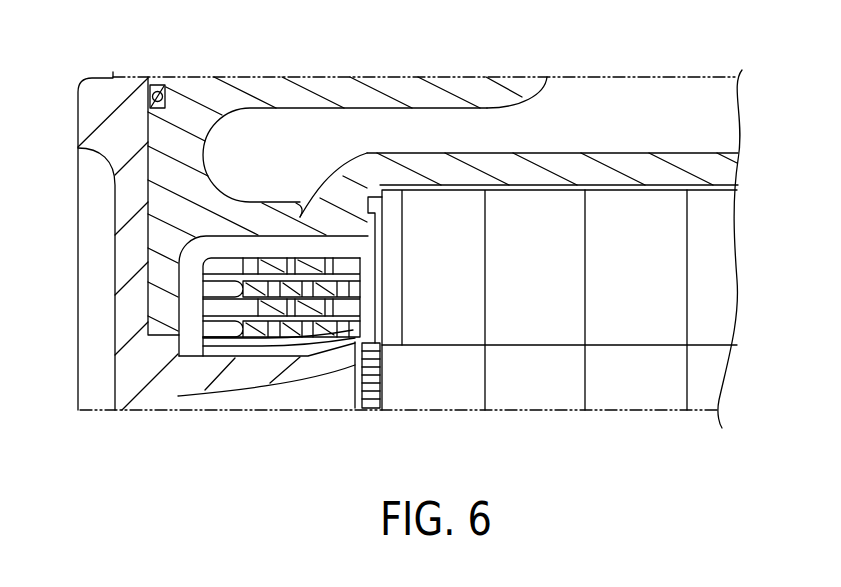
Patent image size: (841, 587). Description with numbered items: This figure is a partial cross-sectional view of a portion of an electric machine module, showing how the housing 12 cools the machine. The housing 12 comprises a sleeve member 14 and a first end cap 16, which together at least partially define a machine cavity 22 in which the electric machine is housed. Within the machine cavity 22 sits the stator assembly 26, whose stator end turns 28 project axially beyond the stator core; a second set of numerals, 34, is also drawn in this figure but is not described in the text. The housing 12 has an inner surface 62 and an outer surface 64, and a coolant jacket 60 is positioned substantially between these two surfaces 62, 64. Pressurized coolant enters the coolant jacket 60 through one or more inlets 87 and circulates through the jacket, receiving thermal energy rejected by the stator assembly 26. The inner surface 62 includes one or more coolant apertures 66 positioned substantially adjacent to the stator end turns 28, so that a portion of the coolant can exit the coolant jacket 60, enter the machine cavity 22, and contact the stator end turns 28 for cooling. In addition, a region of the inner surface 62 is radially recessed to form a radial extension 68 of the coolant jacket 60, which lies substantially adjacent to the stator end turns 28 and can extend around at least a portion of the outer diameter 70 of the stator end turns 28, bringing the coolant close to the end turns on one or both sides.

The housing 12 is at (142, 133).
The sleeve member 14 is at (243, 80).
The first end cap 16 is at (103, 86).
The machine cavity 22 is at (192, 330).
The stator assembly 26 is at (530, 372).
The stator end turns 28 is at (283, 328).
The gear hub 34 is at (559, 300).
The coolant jacket 60 is at (717, 118).
The inner surface 62 is at (673, 183).
The outer surface 64 is at (453, 78).
The coolant apertures 66 is at (317, 202).
The radial extension 68 is at (283, 157).
The outer diameter 70 is at (270, 256).
The inlets 87 is at (645, 88).